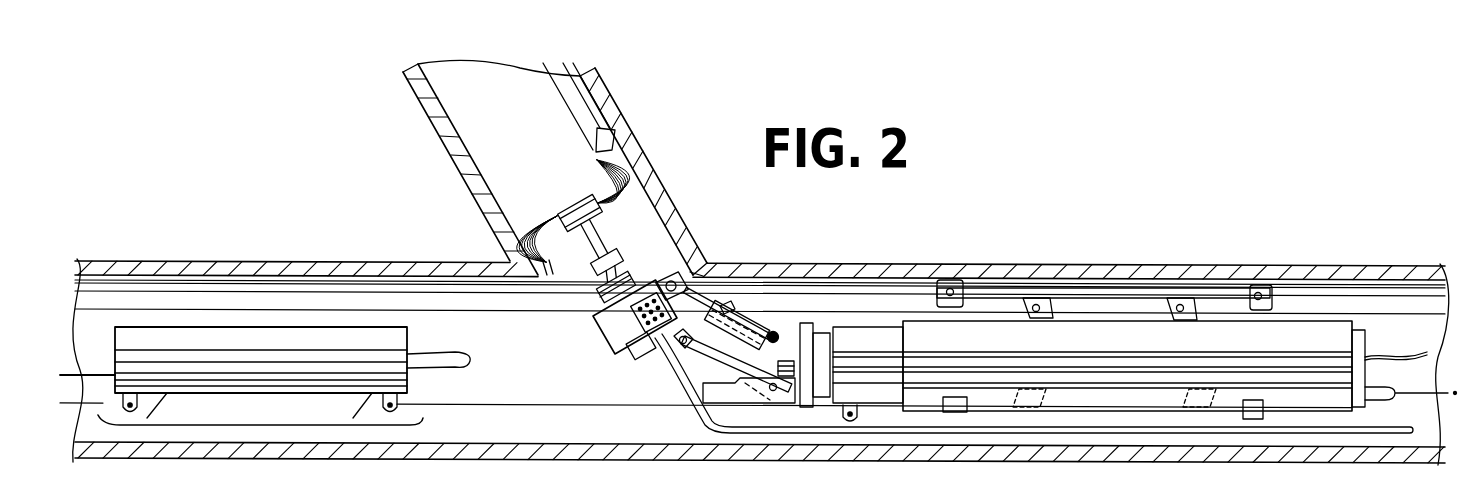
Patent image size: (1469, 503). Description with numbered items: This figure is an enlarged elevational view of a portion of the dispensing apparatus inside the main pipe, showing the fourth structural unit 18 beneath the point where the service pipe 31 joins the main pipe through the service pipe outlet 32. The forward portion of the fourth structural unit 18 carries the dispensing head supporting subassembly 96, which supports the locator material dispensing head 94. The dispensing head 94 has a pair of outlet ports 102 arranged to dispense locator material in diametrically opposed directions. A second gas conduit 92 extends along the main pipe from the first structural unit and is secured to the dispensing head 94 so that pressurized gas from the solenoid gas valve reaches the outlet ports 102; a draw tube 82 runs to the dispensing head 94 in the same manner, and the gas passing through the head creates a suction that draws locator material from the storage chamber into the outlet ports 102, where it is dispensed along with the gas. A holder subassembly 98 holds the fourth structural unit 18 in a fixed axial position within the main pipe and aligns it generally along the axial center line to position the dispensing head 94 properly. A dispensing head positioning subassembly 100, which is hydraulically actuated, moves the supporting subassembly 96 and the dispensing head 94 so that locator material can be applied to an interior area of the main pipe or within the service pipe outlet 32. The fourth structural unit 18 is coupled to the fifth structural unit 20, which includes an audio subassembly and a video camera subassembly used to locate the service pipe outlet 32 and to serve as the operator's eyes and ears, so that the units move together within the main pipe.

The fourth structural unit 18 is at (1160, 260).
The fifth structural unit 20 is at (262, 333).
The service pipe 31 is at (563, 95).
The service pipe outlet 32 is at (694, 262).
The draw tube 82 is at (673, 396).
The second gas conduit 92 is at (658, 332).
The dispensing head 94 is at (573, 207).
The dispensing head supporting subassembly 96 is at (747, 313).
The holder subassembly 98 is at (1063, 290).
The dispensing head positioning subassembly 100 is at (866, 316).
The outlet port 102 is at (596, 158).